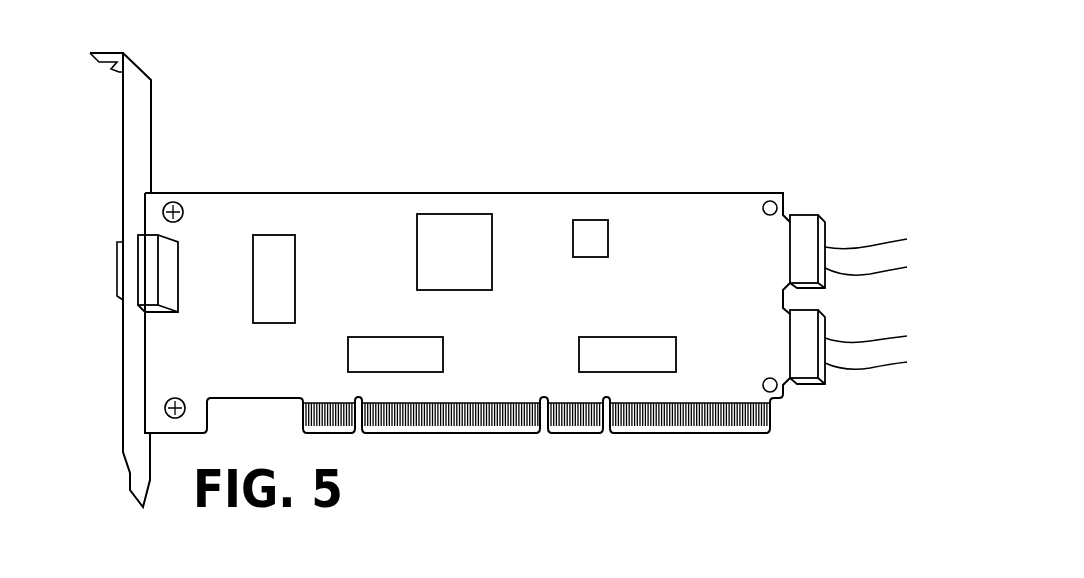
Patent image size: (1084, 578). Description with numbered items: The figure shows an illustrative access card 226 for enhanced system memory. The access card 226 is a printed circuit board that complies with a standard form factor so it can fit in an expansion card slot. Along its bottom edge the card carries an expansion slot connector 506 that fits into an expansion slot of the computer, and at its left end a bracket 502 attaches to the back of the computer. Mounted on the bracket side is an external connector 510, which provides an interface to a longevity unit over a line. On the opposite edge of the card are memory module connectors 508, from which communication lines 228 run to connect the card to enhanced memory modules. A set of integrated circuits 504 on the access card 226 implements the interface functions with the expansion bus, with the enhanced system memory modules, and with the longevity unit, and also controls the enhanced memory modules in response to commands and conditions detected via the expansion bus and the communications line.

The bracket 502 is at (152, 105).
The access card 226 is at (622, 193).
The integrated circuits 504 is at (417, 280).
The expansion slot connector 506 is at (769, 443).
The memory module connectors 508 is at (783, 242).
The external connector 510 is at (117, 262).
The communication lines 228 is at (892, 242).